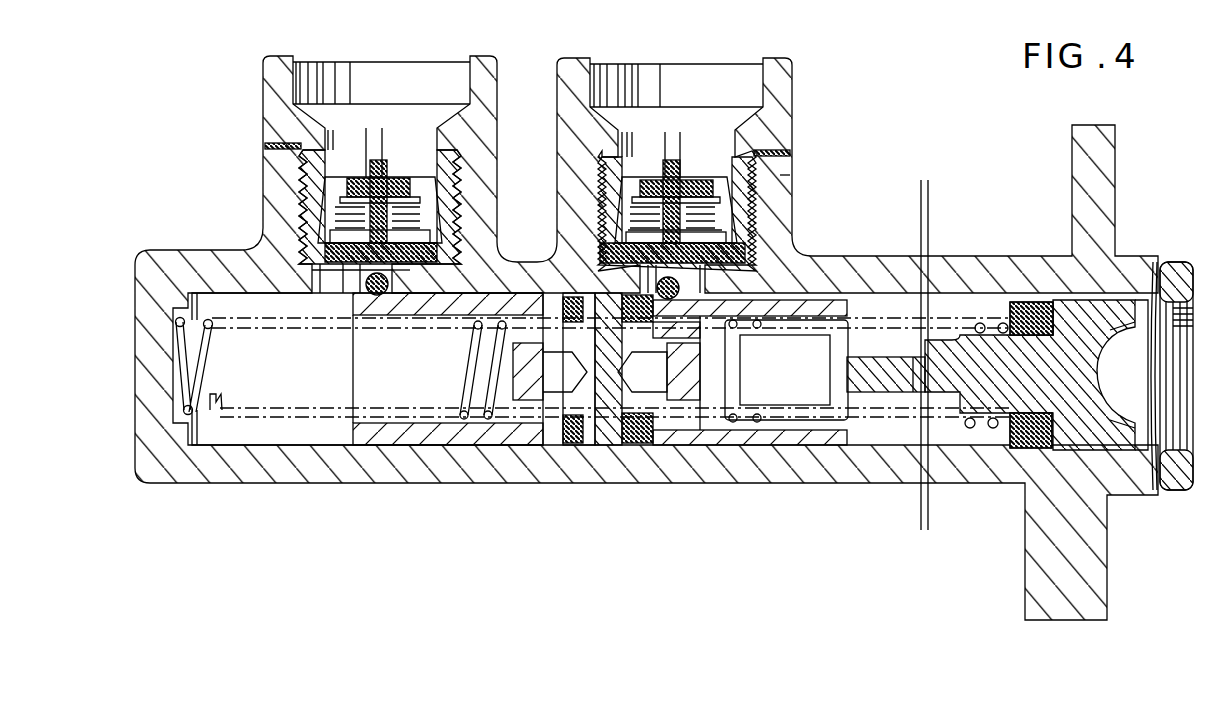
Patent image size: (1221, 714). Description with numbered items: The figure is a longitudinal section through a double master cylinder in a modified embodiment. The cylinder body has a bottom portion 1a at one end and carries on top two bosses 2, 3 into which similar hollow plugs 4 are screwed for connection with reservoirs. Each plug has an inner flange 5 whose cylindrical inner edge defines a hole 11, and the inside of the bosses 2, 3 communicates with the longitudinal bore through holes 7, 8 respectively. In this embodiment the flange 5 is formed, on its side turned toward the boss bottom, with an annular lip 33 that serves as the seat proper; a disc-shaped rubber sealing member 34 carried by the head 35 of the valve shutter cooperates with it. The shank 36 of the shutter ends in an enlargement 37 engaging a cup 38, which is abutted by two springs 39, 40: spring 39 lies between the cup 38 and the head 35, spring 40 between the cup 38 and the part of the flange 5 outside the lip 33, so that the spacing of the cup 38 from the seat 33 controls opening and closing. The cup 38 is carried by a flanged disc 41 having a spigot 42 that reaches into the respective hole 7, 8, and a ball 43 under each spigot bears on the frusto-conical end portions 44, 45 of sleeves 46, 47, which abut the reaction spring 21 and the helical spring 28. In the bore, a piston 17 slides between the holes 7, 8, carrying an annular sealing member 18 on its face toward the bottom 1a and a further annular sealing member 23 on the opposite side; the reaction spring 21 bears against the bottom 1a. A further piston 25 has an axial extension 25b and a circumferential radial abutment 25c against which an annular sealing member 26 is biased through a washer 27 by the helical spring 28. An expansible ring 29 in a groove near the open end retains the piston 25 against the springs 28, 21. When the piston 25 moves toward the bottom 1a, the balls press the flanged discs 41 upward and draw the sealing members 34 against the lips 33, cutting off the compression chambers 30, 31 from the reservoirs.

The bottom portion of the cylinder 1a is at (152, 388).
The boss 2 is at (797, 186).
The boss 3 is at (275, 163).
The hollow plug 4 is at (487, 102).
The flange 5 is at (345, 157).
The hole 7 is at (690, 285).
The hole 8 is at (360, 295).
The hole 11 is at (375, 160).
The piston 17 is at (608, 435).
The annular sealing member 18 is at (580, 433).
The reaction spring 21 is at (290, 415).
The annular sealing member 23 is at (640, 438).
The further piston 25 is at (1133, 312).
The axial extension 25b is at (912, 372).
The circumferential radial abutment 25c is at (1056, 425).
The annular sealing member 26 is at (1035, 318).
The washer 27 is at (1005, 322).
The helical spring 28 is at (957, 322).
The expansible ring 29 is at (1176, 305).
The compression chamber 30 is at (887, 437).
The compression chamber 31 is at (212, 432).
The annular lip 33 is at (403, 170).
The disc-shaped sealing member 34 is at (420, 172).
The head of the valve shutter 35 is at (427, 195).
The shank 36 is at (720, 227).
The enlargement 37 is at (303, 262).
The cup 38 is at (645, 226).
The spring 39 is at (303, 233).
The spring 40 is at (303, 212).
The flanged disc 41 is at (409, 268).
The spigot 42 is at (362, 290).
The ball 43 is at (371, 272).
The frusto-conical end portion 44 is at (373, 427).
The frusto-conical end portion 45 is at (683, 433).
The sleeve 46 is at (473, 432).
The sleeve 47 is at (778, 437).